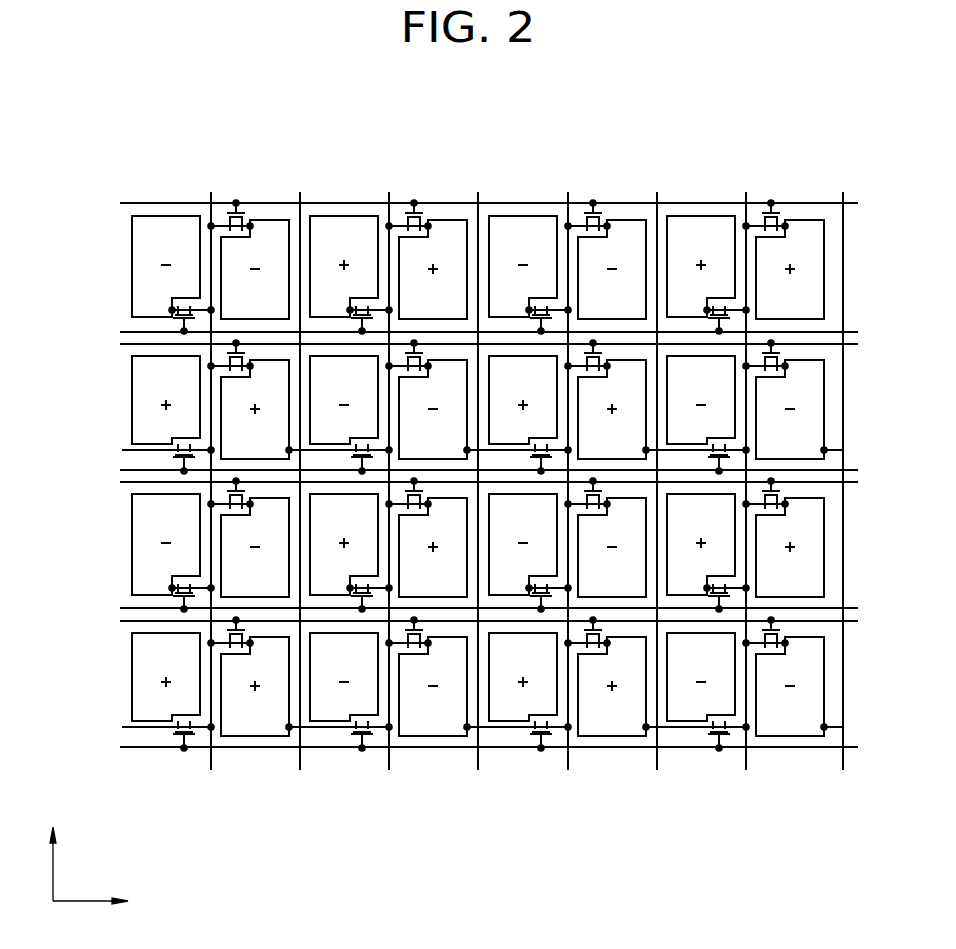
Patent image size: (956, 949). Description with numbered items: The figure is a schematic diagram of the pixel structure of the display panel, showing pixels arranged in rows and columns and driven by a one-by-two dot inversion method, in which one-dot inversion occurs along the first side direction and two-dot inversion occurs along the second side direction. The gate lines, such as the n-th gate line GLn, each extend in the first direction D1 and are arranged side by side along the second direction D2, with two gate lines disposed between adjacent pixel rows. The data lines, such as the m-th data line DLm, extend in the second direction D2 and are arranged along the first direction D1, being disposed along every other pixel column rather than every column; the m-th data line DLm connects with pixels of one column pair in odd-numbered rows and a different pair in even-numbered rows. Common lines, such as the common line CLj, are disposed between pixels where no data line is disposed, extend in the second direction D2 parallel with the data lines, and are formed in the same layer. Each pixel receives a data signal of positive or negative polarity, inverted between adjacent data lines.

The m-th data line DLm is at (211, 467).
The common line CLj is at (300, 467).
The n-th gate line GLn is at (127, 332).
The first direction D1 is at (105, 900).
The second direction D2 is at (51, 852).